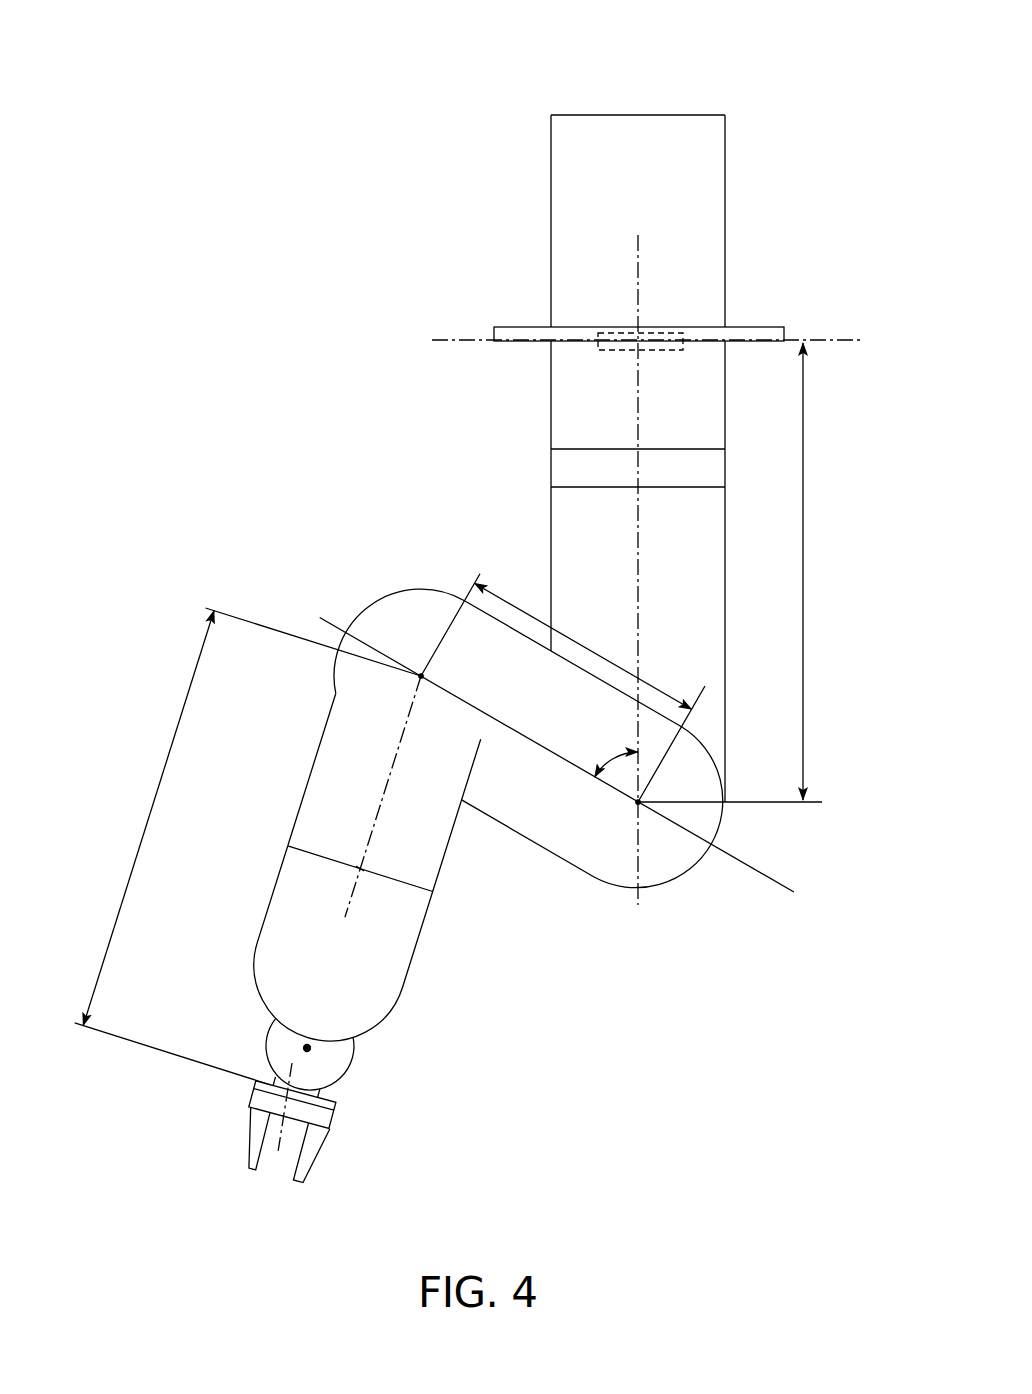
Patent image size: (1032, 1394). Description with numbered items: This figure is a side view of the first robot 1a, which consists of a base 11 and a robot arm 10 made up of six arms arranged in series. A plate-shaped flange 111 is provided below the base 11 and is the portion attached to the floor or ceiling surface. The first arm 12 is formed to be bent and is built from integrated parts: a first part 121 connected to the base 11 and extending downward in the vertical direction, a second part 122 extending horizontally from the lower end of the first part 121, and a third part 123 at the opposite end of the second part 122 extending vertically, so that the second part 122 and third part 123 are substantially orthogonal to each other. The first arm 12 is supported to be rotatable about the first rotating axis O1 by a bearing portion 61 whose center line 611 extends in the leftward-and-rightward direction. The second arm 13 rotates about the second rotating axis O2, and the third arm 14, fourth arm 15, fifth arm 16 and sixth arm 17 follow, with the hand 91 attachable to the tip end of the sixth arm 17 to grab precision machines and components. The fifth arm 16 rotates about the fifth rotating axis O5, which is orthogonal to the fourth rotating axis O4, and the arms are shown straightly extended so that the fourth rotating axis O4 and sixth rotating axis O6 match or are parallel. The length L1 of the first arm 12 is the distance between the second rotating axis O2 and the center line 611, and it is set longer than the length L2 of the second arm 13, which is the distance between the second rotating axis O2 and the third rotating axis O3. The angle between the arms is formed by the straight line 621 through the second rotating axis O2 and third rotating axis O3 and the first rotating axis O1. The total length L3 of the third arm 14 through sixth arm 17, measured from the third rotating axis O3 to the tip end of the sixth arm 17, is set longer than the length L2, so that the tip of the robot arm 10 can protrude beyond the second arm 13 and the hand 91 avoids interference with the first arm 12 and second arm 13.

The first robot 1a is at (758, 106).
The robot arm 10 is at (550, 527).
The base 11 is at (727, 228).
The flange 111 is at (513, 333).
The first arm 12 is at (550, 484).
The first part 121 is at (568, 358).
The second part 122 is at (568, 411).
The third part 123 is at (568, 551).
The second arm 13 is at (541, 849).
The third arm 14 is at (334, 705).
The fourth arm 15 is at (276, 902).
The fifth arm 16 is at (355, 1062).
The sixth arm 17 is at (340, 1108).
The hand 91 is at (241, 1140).
The bearing portion 61 is at (672, 338).
The center line 611 is at (830, 343).
The straight line 621 is at (768, 895).
The first rotating axis O1 is at (638, 503).
The second rotating axis O2 is at (640, 806).
The third rotating axis O3 is at (420, 672).
The fourth rotating axis O4 is at (366, 848).
The fifth rotating axis O5 is at (283, 1033).
The sixth rotating axis O6 is at (270, 1070).
The length of the first arm L1 is at (738, 572).
The length of the second arm L2 is at (563, 688).
The total length of the third to sixth arms L3 is at (248, 846).